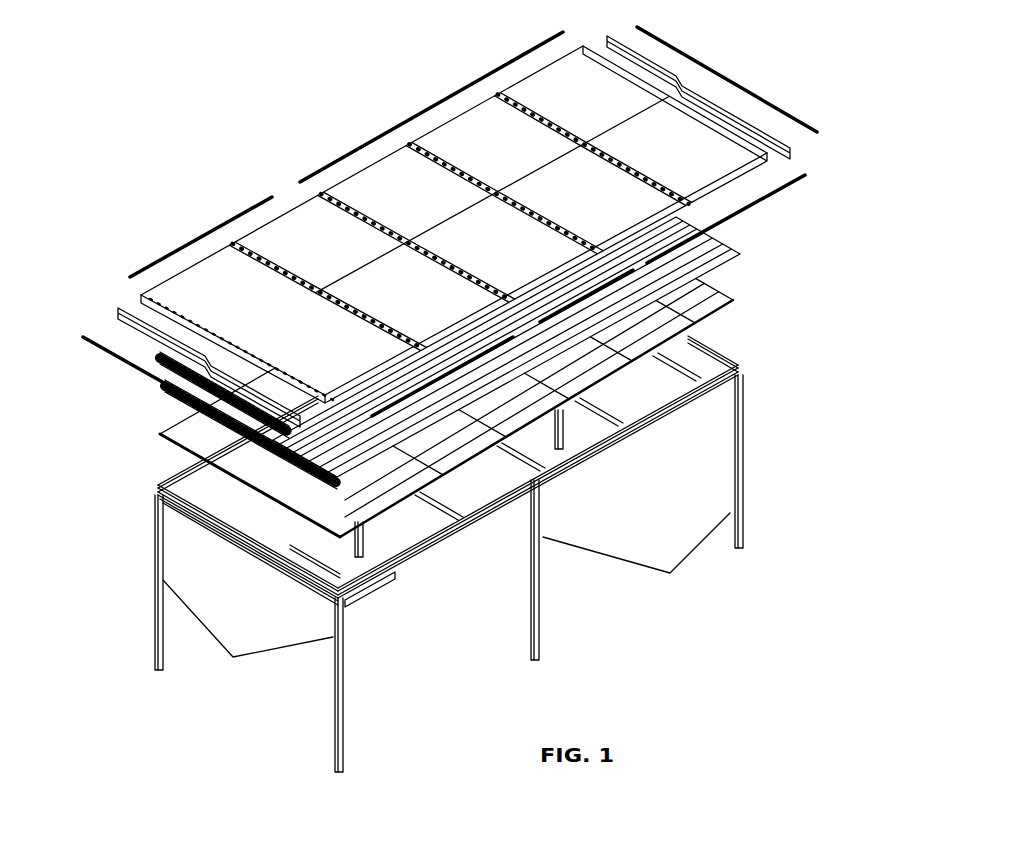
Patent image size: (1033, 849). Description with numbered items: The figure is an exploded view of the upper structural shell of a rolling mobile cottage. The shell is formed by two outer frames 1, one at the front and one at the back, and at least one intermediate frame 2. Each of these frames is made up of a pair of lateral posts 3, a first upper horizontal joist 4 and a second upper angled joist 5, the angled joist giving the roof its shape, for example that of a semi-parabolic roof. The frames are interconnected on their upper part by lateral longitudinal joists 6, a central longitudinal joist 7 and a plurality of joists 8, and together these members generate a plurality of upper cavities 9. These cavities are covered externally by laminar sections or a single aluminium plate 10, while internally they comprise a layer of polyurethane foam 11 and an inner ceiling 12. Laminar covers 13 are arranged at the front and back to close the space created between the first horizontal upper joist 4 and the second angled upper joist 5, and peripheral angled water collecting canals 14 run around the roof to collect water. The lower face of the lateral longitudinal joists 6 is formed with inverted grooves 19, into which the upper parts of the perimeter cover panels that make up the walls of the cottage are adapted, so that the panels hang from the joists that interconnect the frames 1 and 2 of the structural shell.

The outer frames 1 is at (347, 668).
The intermediate frame 2 is at (545, 585).
The lateral posts 3 is at (233, 660).
The first upper horizontal joist 4 is at (233, 540).
The second upper angled joist 5 is at (353, 600).
The lateral longitudinal joists 6 is at (185, 472).
The central longitudinal joist 7 is at (393, 592).
The joists 8 is at (430, 519).
The upper cavities 9 is at (657, 390).
The aluminium plate 10 is at (330, 240).
The layer of polyurethane foam 11 is at (167, 390).
The inner ceiling 12 is at (173, 439).
The laminar covers 13 is at (680, 74).
The peripheral angled water collecting canals 14 is at (225, 220).
The inverted grooves 19 is at (497, 523).